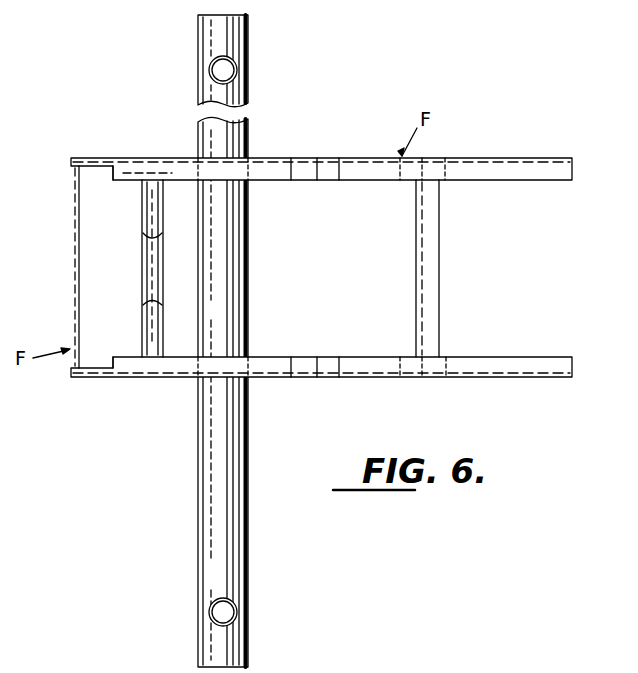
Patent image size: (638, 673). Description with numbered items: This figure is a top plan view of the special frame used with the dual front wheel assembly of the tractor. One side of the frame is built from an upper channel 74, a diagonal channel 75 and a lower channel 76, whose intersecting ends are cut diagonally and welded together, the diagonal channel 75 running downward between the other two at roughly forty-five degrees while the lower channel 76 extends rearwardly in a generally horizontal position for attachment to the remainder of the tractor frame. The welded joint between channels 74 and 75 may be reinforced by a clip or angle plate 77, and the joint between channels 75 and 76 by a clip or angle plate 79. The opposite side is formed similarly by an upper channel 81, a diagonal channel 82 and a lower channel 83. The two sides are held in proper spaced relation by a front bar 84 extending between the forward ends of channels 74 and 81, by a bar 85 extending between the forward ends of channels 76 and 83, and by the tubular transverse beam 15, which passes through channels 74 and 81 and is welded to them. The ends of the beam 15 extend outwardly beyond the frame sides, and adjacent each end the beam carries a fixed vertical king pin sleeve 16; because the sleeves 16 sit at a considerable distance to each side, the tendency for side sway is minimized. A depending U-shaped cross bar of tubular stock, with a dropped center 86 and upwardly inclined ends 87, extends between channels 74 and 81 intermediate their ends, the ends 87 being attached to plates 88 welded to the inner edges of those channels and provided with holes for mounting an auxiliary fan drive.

The transverse beam 15 is at (198, 33).
The king pin sleeve 16 is at (237, 79).
The upper channel 74 is at (262, 367).
The diagonal channel 75 is at (360, 362).
The lower channel 76 is at (503, 375).
The clip or angle plate 77 is at (307, 166).
The clip or angle plate 79 is at (423, 172).
The upper channel 81 is at (263, 166).
The diagonal channel 82 is at (360, 166).
The lower channel 83 is at (480, 170).
The front bar 84 is at (72, 293).
The bar 85 is at (432, 292).
The dropped center 86 is at (143, 275).
The ends 87 is at (158, 208).
The plate 88 is at (134, 172).